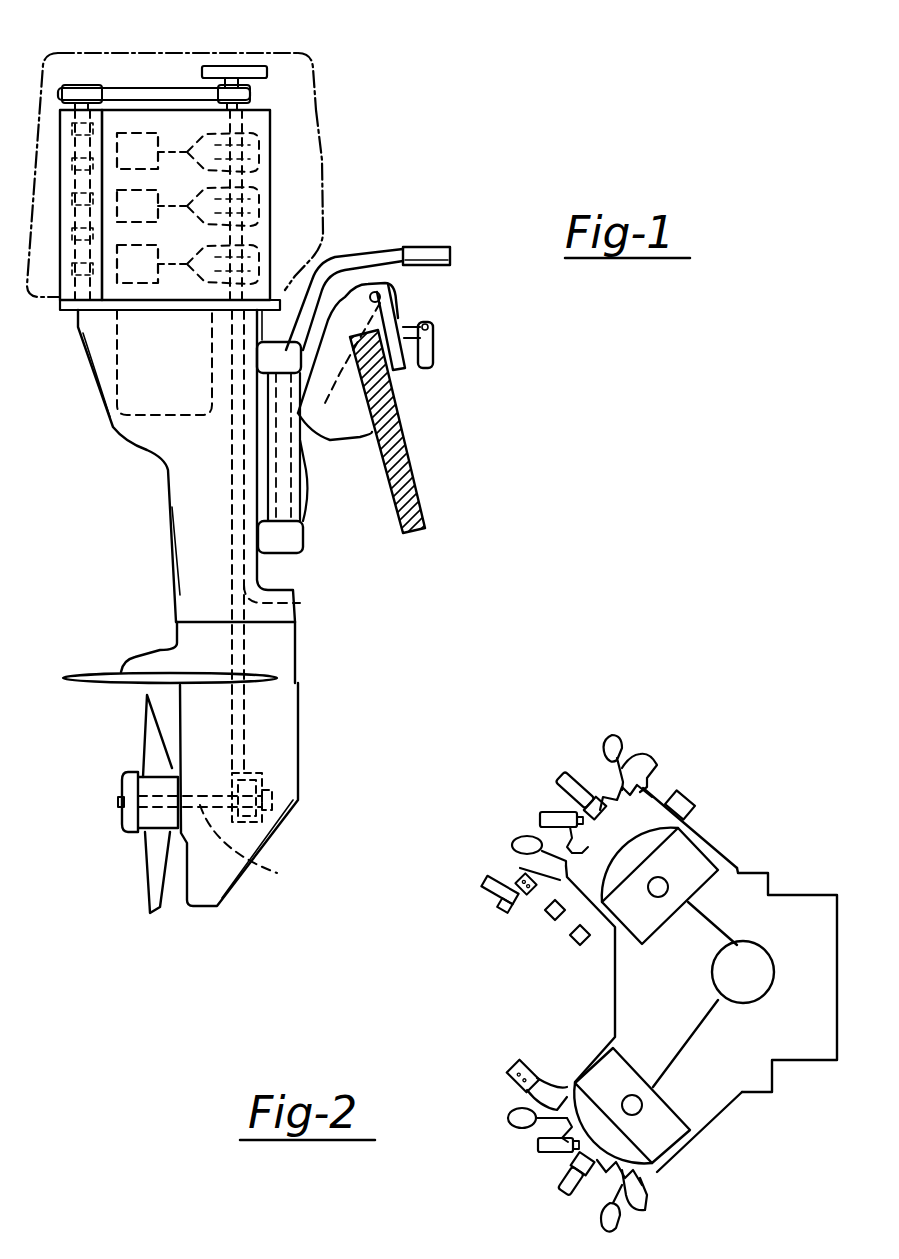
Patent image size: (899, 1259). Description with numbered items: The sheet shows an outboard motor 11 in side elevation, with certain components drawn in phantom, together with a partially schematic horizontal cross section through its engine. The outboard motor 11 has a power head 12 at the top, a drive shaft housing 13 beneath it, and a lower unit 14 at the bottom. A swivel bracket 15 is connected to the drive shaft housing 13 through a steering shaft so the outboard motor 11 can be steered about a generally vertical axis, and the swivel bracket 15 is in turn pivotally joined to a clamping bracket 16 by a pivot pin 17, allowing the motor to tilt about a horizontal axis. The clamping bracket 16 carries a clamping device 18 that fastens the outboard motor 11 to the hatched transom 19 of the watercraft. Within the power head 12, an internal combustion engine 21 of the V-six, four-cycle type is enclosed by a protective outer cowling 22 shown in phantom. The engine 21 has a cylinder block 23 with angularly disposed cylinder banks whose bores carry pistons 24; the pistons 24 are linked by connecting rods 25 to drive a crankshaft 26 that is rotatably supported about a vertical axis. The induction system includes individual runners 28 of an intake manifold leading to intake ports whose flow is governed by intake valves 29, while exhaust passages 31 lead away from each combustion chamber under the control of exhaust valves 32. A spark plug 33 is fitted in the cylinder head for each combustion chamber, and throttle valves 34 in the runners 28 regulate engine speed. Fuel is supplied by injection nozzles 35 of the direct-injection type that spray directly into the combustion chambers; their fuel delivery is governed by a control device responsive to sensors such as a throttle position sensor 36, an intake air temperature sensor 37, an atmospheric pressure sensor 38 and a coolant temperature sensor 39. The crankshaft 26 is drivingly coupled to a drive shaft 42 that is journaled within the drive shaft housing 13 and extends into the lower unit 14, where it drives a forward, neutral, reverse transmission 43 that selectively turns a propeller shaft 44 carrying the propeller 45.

In FIG. 1, the outboard motor 11 is at (302, 43).
In FIG. 1, the power head 12 is at (324, 70).
In FIG. 1, the drive shaft housing 13 is at (177, 469).
In FIG. 1, the lower unit 14 is at (293, 740).
In FIG. 1, the swivel bracket 15 is at (300, 440).
In FIG. 1, the clamping bracket 16 is at (347, 408).
In FIG. 1, the pivot pin 17 is at (382, 297).
In FIG. 1, the clamping device 18 is at (434, 350).
In FIG. 1, the transom 19 is at (380, 462).
In FIG. 1, the internal combustion engine 21 is at (284, 159).
In FIG. 2, the internal combustion engine 21 is at (738, 862).
In FIG. 1, the protective outer cowling 22 is at (323, 197).
In FIG. 2, the cylinder block 23 is at (708, 858).
In FIG. 1, the piston 24 is at (137, 132).
In FIG. 2, the piston 24 is at (688, 840).
In FIG. 2, the connecting rod 25 is at (768, 873).
In FIG. 1, the crankshaft 26 is at (272, 118).
In FIG. 2, the crankshaft 26 is at (758, 965).
In FIG. 2, the intake manifold runner 28 is at (530, 893).
In FIG. 2, the intake valve 29 is at (582, 853).
In FIG. 2, the exhaust passage 31 is at (645, 762).
In FIG. 2, the exhaust valve 32 is at (633, 802).
In FIG. 2, the spark plug 33 is at (567, 773).
In FIG. 2, the throttle valve 34 is at (530, 872).
In FIG. 2, the injection nozzle 35 is at (545, 812).
In FIG. 2, the throttle position sensor 36 is at (554, 921).
In FIG. 2, the intake air temperature sensor 37 is at (490, 902).
In FIG. 2, the atmospheric pressure sensor 38 is at (580, 946).
In FIG. 2, the coolant temperature sensor 39 is at (690, 793).
In FIG. 1, the drive shaft 42 is at (300, 603).
In FIG. 1, the forward, neutral, reverse transmission 43 is at (289, 782).
In FIG. 1, the propeller shaft 44 is at (262, 858).
In FIG. 1, the propeller 45 is at (152, 870).